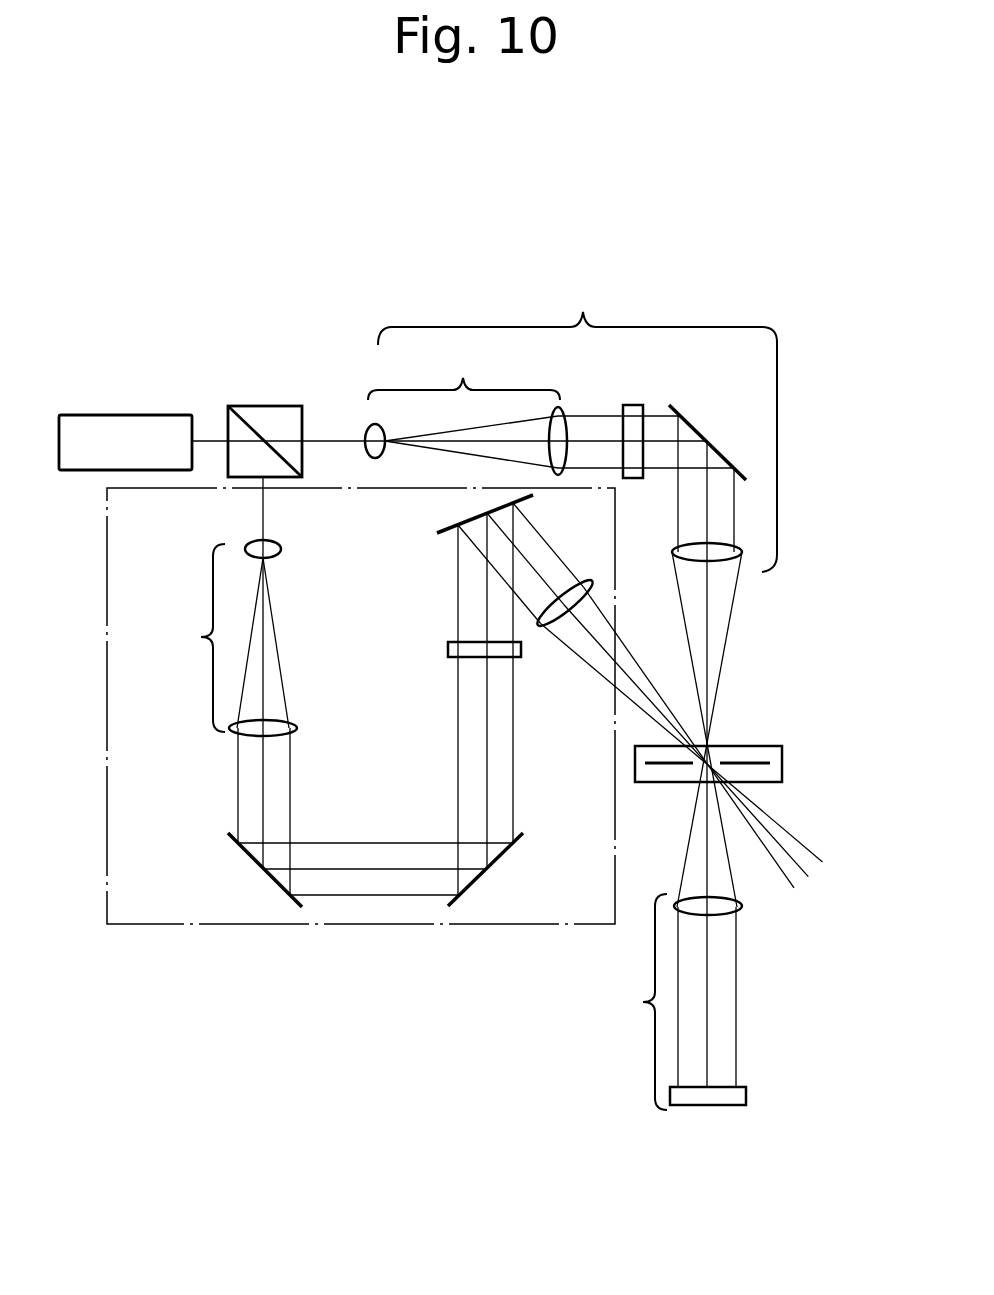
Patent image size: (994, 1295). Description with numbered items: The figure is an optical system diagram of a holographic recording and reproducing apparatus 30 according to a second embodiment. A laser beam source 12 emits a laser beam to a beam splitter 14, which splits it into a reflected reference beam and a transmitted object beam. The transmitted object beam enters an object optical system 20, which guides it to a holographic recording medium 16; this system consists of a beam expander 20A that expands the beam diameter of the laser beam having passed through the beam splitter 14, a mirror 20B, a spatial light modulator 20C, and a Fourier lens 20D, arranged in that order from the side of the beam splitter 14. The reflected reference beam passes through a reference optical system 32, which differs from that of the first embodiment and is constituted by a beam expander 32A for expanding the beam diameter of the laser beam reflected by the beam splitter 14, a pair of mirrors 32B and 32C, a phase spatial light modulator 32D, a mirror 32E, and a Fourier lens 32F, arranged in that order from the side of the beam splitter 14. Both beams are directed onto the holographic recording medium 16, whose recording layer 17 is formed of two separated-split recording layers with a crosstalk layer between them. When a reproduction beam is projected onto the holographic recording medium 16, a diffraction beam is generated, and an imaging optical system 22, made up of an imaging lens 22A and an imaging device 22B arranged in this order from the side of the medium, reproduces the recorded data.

The holographic recording and reproducing apparatus 30 is at (267, 288).
The laser beam source 12 is at (157, 416).
The beam splitter 14 is at (266, 386).
The object optical system 20 is at (577, 425).
The beam expander 20A is at (466, 410).
The mirror 20B is at (678, 405).
The spatial light modulator 20C is at (632, 404).
The Fourier lens 20D is at (743, 554).
The holographic recording medium 16 is at (752, 746).
The recording layer 17 is at (770, 763).
The imaging optical system 22 is at (632, 1002).
The imaging lens 22A is at (742, 907).
The imaging device 22B is at (746, 1092).
The reference optical system 32 is at (158, 930).
The beam expander 32A is at (217, 638).
The mirror 32B is at (240, 858).
The mirror 32C is at (500, 858).
The phase spatial light modulator 32D is at (448, 650).
The mirror 32E is at (437, 530).
The Fourier lens 32F is at (542, 627).